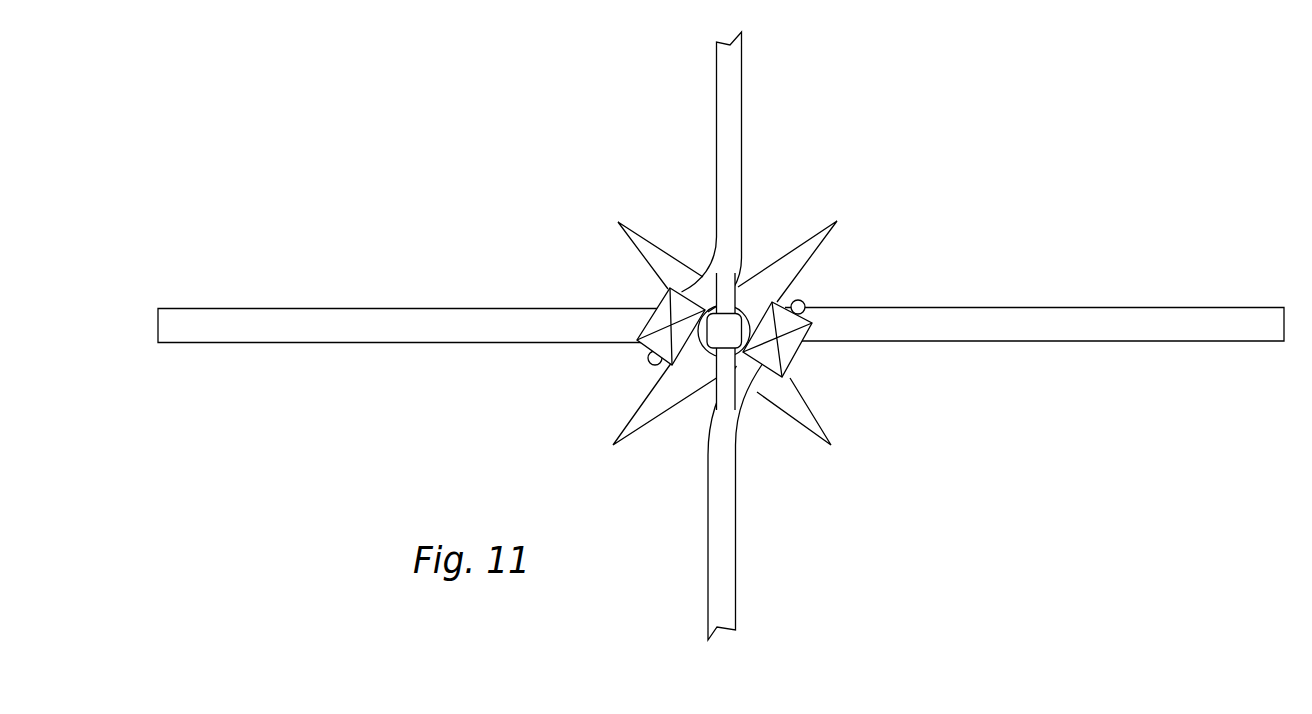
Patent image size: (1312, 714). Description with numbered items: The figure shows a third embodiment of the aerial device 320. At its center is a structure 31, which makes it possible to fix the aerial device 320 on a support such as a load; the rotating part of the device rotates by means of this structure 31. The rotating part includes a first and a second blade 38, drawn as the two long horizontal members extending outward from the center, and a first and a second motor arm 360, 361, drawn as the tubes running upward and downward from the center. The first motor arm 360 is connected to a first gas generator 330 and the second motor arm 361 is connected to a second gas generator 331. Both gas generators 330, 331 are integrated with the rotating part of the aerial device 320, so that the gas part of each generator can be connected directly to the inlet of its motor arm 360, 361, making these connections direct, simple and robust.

The structure 31 is at (798, 195).
The blade 38 is at (330, 322).
The aerial device 320 is at (525, 225).
The first gas generator 330 is at (663, 308).
The second gas generator 331 is at (790, 345).
The first motor arm 360 is at (728, 90).
The second motor arm 361 is at (717, 562).